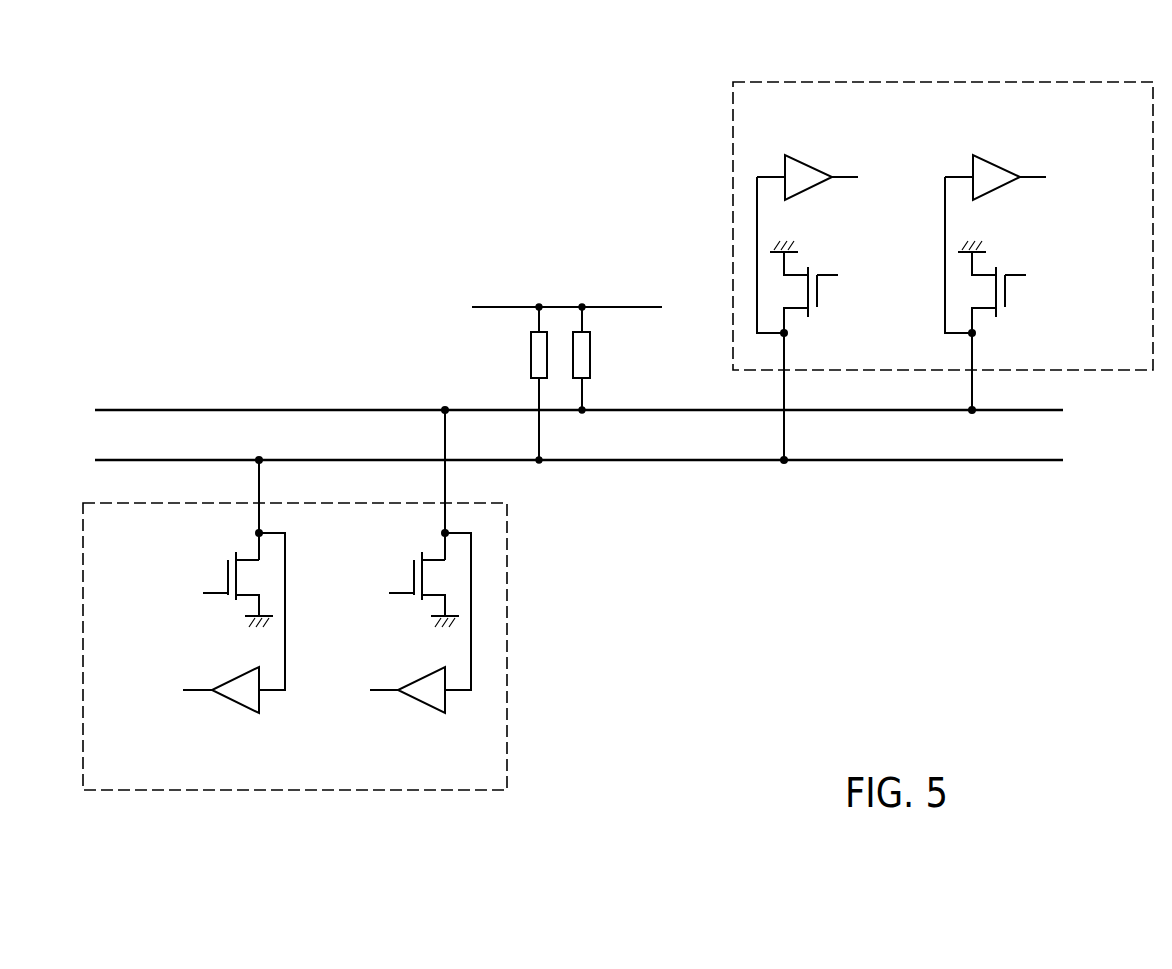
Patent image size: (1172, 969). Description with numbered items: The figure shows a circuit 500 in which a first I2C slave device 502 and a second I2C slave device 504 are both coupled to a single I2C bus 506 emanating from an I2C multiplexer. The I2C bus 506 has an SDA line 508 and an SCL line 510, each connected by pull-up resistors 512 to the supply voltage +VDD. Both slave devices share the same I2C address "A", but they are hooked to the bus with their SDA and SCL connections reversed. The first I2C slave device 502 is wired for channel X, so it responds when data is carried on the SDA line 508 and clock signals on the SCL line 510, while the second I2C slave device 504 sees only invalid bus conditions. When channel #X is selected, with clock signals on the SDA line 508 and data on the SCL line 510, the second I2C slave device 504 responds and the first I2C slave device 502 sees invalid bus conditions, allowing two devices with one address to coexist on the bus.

The circuit 500 is at (356, 177).
The first I2C slave device 502 is at (298, 790).
The second I2C slave device 504 is at (950, 82).
The I2C bus 506 is at (1066, 390).
The SDA line 508 is at (347, 410).
The SCL line 510 is at (375, 460).
The pull-up resistors 512 is at (478, 315).